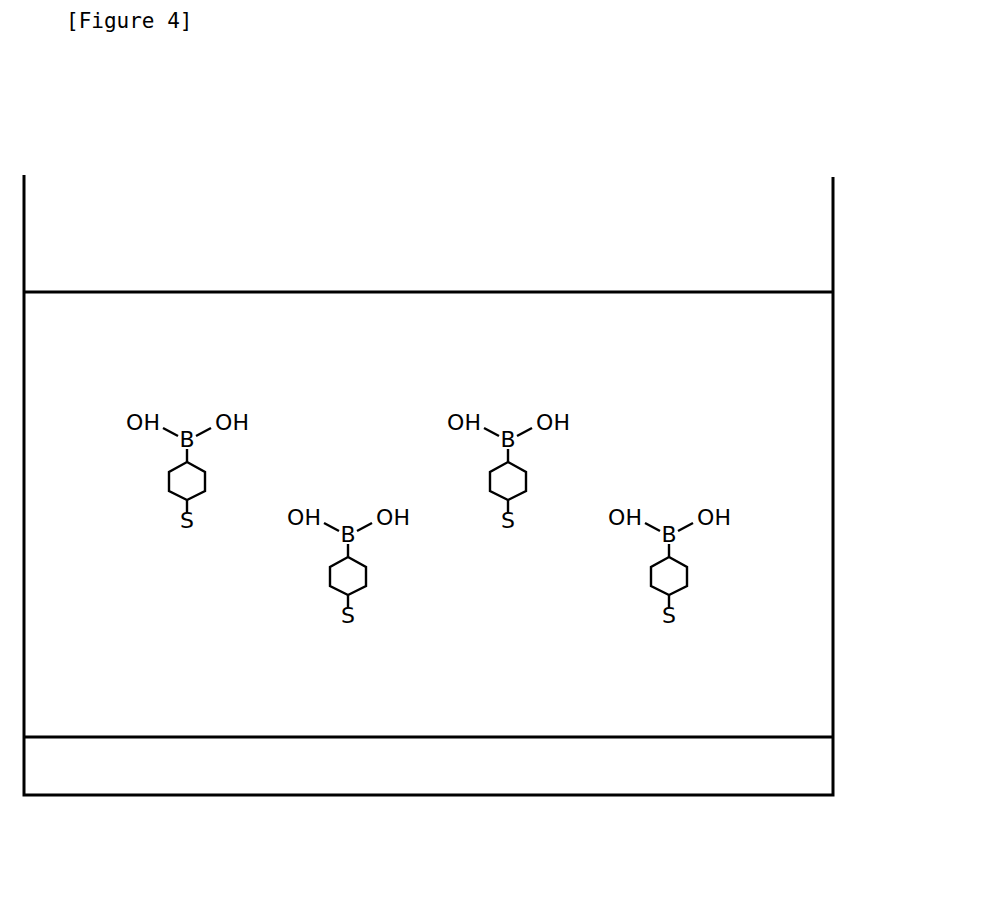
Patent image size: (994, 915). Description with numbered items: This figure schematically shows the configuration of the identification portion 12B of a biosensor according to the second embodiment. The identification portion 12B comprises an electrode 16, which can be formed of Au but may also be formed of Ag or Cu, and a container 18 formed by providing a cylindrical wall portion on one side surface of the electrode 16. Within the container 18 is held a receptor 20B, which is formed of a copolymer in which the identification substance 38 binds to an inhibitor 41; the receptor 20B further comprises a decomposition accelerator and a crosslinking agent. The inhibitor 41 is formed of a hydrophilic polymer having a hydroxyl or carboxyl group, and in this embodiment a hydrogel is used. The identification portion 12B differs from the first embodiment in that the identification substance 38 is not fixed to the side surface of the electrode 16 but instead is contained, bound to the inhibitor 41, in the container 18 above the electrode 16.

The identification portion 12B is at (473, 433).
The container 18 is at (773, 194).
The electrode 16 is at (790, 736).
The receptor 20B is at (779, 391).
The inhibitor 41 is at (516, 519).
The identification substance 38 is at (715, 571).